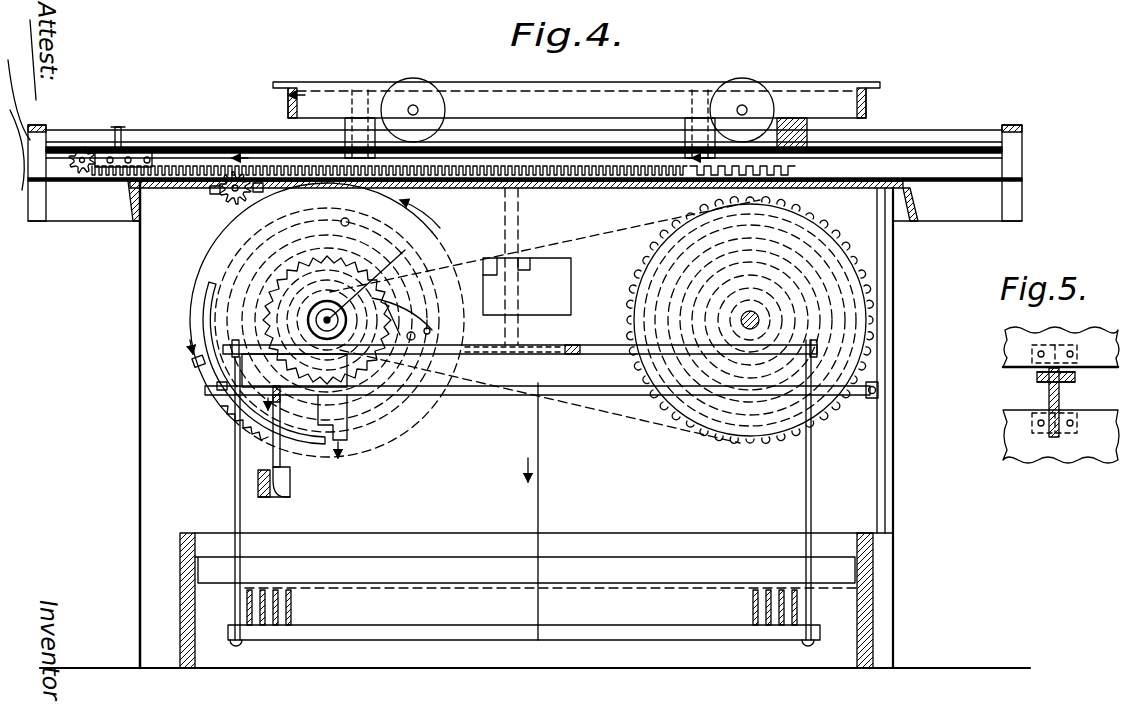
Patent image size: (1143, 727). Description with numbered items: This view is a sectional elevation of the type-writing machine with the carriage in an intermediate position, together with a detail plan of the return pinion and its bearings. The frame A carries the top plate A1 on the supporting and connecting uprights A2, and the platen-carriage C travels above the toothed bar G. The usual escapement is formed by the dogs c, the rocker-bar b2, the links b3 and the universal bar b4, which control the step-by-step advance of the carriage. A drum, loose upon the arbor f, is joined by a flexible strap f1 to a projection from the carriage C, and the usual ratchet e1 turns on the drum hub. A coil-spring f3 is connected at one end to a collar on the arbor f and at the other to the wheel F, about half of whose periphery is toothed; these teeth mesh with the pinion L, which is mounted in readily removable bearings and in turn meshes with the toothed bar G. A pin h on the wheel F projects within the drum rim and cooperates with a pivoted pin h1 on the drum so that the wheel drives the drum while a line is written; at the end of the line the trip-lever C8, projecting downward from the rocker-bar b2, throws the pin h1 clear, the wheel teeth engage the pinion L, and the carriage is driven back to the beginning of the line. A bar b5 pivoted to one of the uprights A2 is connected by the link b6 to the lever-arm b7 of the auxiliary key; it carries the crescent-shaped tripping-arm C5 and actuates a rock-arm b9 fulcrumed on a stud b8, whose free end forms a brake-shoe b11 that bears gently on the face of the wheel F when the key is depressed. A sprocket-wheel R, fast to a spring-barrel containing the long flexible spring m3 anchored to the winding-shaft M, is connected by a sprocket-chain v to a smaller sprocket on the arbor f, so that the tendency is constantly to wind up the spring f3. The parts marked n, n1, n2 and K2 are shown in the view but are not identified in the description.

In FIG. 4, the frame A is at (180, 550).
In FIG. 4, the top plate A1 is at (930, 214).
In FIG. 5, the top plate A1 is at (1018, 418).
In FIG. 4, the supporting and connecting uprights A2 is at (885, 497).
In FIG. 4, the platen-carriage C is at (576, 118).
In FIG. 4, the toothed bar G is at (190, 164).
In FIG. 4, the pinion n is at (74, 170).
In FIG. 4, the adjusting screw n1 is at (94, 148).
In FIG. 4, the bracket n2 is at (128, 152).
In FIG. 4, the gear bracket K2 is at (248, 198).
In FIG. 5, the gear bracket K2 is at (1077, 352).
In FIG. 4, the pinion L is at (218, 192).
In FIG. 5, the pinion L is at (1076, 378).
In FIG. 4, the wheel F is at (327, 320).
In FIG. 4, the coil-spring f3 is at (270, 250).
In FIG. 4, the ratchet e1 is at (367, 272).
In FIG. 4, the arbor f is at (385, 295).
In FIG. 4, the flexible strap f1 is at (420, 201).
In FIG. 4, the crescent-shaped tripping-arm C5 is at (333, 465).
In FIG. 4, the pin h is at (192, 360).
In FIG. 4, the pivoted pin h1 is at (216, 386).
In FIG. 4, the bar b5 is at (500, 385).
In FIG. 4, the rocker-bar b2 is at (430, 360).
In FIG. 4, the links b3 is at (820, 482).
In FIG. 4, the link b6 is at (537, 470).
In FIG. 4, the lever-arm b7 is at (538, 600).
In FIG. 4, the universal bar b4 is at (480, 632).
In FIG. 4, the rock-arm b9 is at (282, 435).
In FIG. 4, the stud b8 is at (268, 492).
In FIG. 4, the trip-lever C8 is at (348, 420).
In FIG. 4, the brake-shoe b11 is at (232, 440).
In FIG. 4, the dogs c is at (527, 266).
In FIG. 4, the sprocket-chain v is at (640, 428).
In FIG. 4, the sprocket-wheel R is at (750, 320).
In FIG. 4, the spring m3 is at (680, 262).
In FIG. 4, the winding-shaft M is at (760, 320).